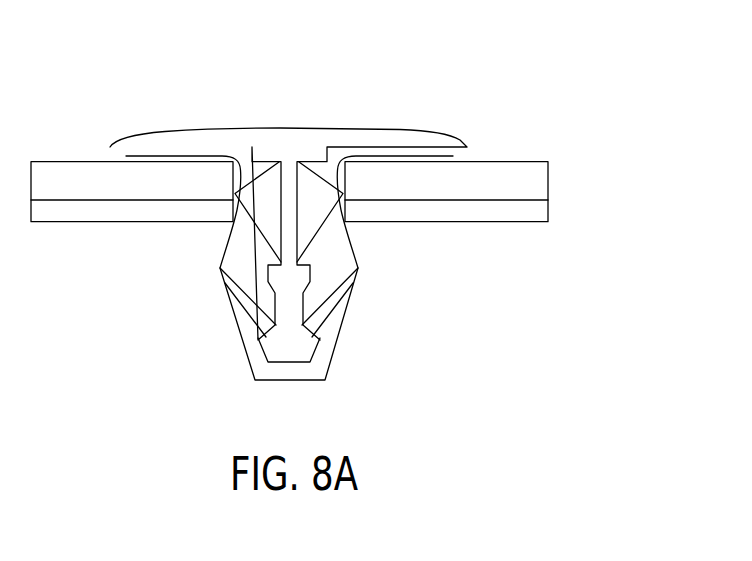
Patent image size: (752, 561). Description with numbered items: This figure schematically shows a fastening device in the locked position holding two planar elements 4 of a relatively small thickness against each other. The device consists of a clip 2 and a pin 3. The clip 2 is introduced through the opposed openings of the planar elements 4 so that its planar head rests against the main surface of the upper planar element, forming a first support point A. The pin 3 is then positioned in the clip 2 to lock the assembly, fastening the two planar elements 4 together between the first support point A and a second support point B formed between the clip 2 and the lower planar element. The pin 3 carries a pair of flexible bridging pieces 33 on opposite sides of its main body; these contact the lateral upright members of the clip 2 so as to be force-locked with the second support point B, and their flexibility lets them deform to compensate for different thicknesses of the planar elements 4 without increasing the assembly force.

The clip 2 is at (342, 326).
The pin 3 is at (325, 127).
The flexible bridging piece 33 is at (323, 237).
The planar element 4 is at (535, 173).
The first support point A is at (234, 166).
The second support point B is at (231, 225).